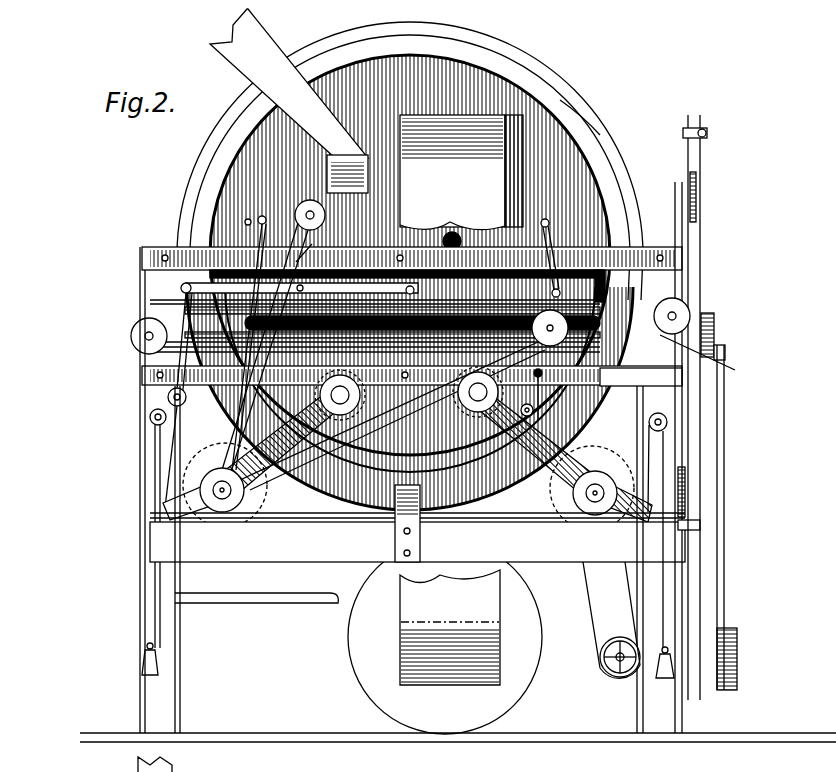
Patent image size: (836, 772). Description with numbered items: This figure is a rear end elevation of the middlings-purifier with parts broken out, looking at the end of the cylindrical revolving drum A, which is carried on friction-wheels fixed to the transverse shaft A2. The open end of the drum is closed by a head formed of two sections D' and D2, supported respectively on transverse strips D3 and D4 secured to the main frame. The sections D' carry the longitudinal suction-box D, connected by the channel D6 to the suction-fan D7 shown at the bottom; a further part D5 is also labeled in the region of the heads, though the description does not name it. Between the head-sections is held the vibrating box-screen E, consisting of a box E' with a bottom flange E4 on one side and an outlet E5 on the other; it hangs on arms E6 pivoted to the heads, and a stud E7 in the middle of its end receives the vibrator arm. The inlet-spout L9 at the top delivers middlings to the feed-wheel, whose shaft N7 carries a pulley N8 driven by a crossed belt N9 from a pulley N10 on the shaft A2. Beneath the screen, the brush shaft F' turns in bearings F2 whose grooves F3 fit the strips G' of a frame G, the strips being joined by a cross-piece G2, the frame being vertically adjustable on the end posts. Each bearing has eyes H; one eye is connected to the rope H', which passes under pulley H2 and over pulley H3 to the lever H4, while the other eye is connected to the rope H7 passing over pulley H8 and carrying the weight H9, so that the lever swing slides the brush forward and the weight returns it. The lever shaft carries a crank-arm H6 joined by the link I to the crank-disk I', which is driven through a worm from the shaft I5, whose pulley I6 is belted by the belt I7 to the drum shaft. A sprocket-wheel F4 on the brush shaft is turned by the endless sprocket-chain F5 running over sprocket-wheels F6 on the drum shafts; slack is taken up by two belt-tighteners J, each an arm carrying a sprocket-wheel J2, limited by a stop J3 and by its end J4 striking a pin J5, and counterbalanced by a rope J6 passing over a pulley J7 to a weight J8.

The revolving drum A is at (410, 161).
The shaft A2 is at (225, 500).
The suction-box D is at (410, 286).
The head-section D' is at (586, 119).
The head-section D2 is at (380, 495).
The transverse strip D3 is at (390, 352).
The transverse strip D4 is at (641, 377).
The rod D5 is at (470, 265).
The channel D6 is at (461, 172).
The suction-fan D7 is at (350, 675).
The vibrating box-screen E is at (377, 292).
The box E' is at (520, 397).
The bottom flange E4 is at (548, 373).
The outlet E5 is at (258, 230).
The arm E6 is at (555, 240).
The stud E7 is at (455, 232).
The shaft F' is at (404, 388).
The bearing F2 is at (335, 418).
The groove F3 is at (470, 428).
The sprocket-wheel F4 is at (600, 480).
The endless sprocket-chain F5 is at (470, 523).
The sprocket-wheel F6 is at (215, 505).
The frame G is at (136, 333).
The strip G' is at (703, 341).
The cross-piece G2 is at (136, 345).
The eye H is at (167, 291).
The pulley H2 is at (145, 375).
The pulley H3 is at (688, 180).
The lever H4 is at (700, 250).
The crank-arm H6 is at (714, 335).
The rope H7 is at (178, 360).
The pulley H8 is at (130, 350).
The weight H9 is at (138, 440).
The link I is at (701, 457).
The crank-disk I' is at (732, 648).
The shaft I5 is at (608, 675).
The pulley I6 is at (620, 640).
The belt I7 is at (592, 637).
The belt-tightener J is at (390, 481).
The sprocket-wheel J2 is at (377, 430).
The stop J3 is at (433, 450).
The end of lever J4 is at (165, 512).
The pin J5 is at (170, 520).
The rope J6 is at (154, 470).
The pulley J7 is at (150, 413).
The weight J8 is at (158, 668).
The inlet-spout L9 is at (272, 42).
The shaft N7 is at (328, 165).
The pulley N8 is at (326, 213).
The crossed belt N9 is at (313, 245).
The pulley N10 is at (228, 495).